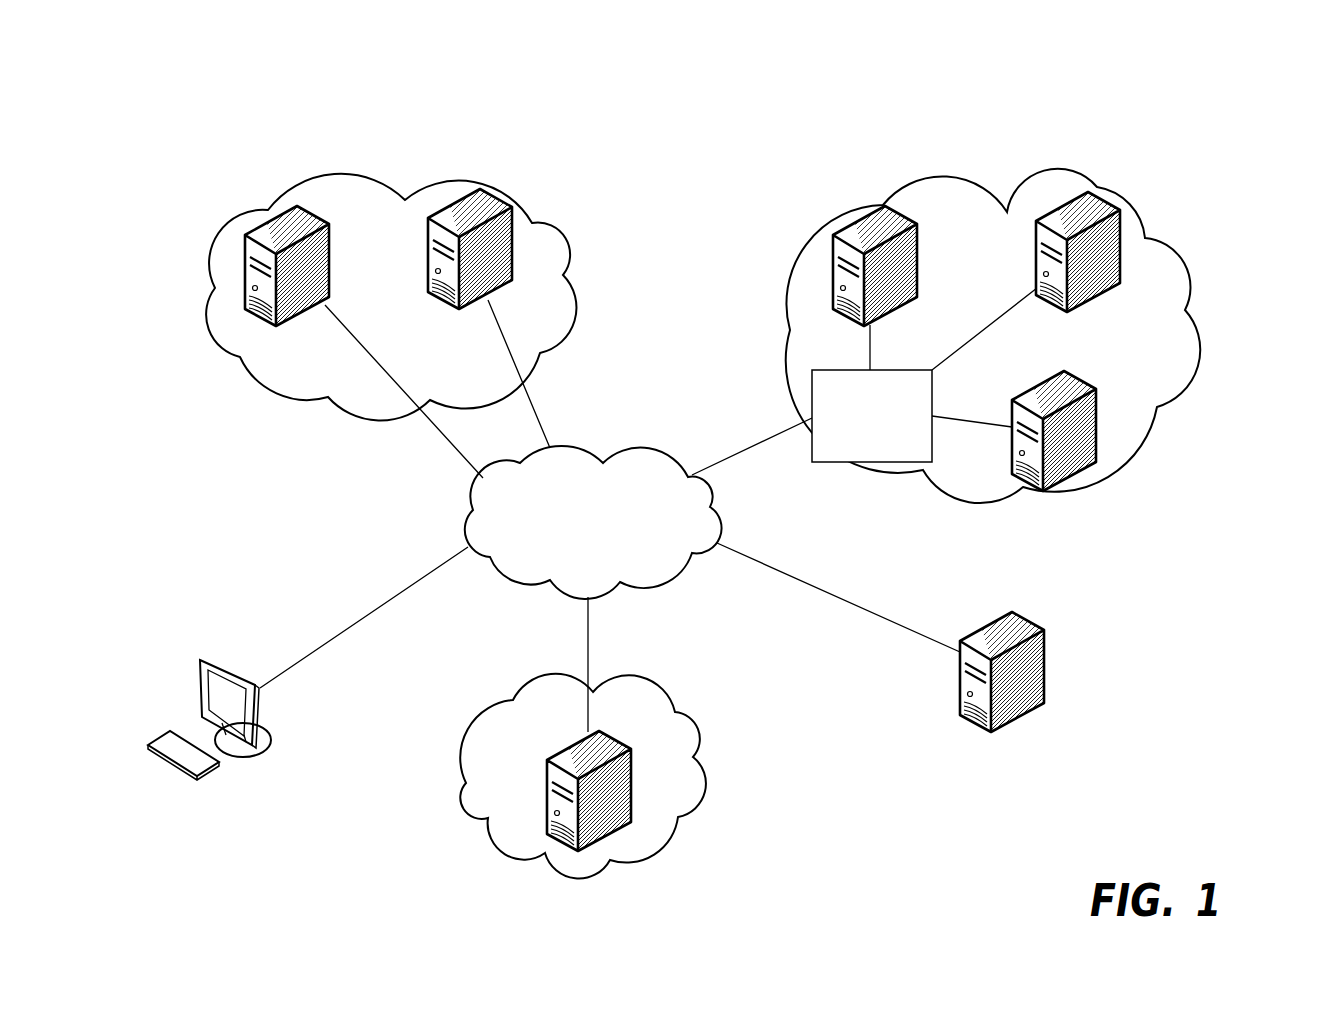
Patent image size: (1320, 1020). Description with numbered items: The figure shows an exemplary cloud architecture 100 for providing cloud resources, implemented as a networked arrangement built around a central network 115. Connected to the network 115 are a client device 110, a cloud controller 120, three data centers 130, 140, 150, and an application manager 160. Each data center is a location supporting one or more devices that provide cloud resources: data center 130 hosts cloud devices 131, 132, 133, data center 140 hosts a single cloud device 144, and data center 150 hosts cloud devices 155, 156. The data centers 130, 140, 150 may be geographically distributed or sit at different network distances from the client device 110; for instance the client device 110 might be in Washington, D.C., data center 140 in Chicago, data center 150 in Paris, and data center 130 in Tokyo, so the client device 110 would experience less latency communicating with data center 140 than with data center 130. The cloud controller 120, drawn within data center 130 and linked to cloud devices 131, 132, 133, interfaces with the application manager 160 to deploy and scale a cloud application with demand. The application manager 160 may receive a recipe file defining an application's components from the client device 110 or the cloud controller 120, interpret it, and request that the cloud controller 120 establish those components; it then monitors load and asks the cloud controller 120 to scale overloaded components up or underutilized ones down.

The cloud architecture 100 is at (228, 84).
The client device 110 is at (210, 653).
The network 115 is at (632, 448).
The cloud controller 120 is at (872, 462).
The data center 130 is at (1200, 335).
The cloud device 131 is at (838, 232).
The cloud device 132 is at (1105, 200).
The cloud device 133 is at (1099, 387).
The data center 140 is at (705, 775).
The cloud device 144 is at (577, 743).
The data center 150 is at (578, 293).
The cloud device 155 is at (297, 205).
The cloud device 156 is at (480, 187).
The application manager 160 is at (1027, 620).